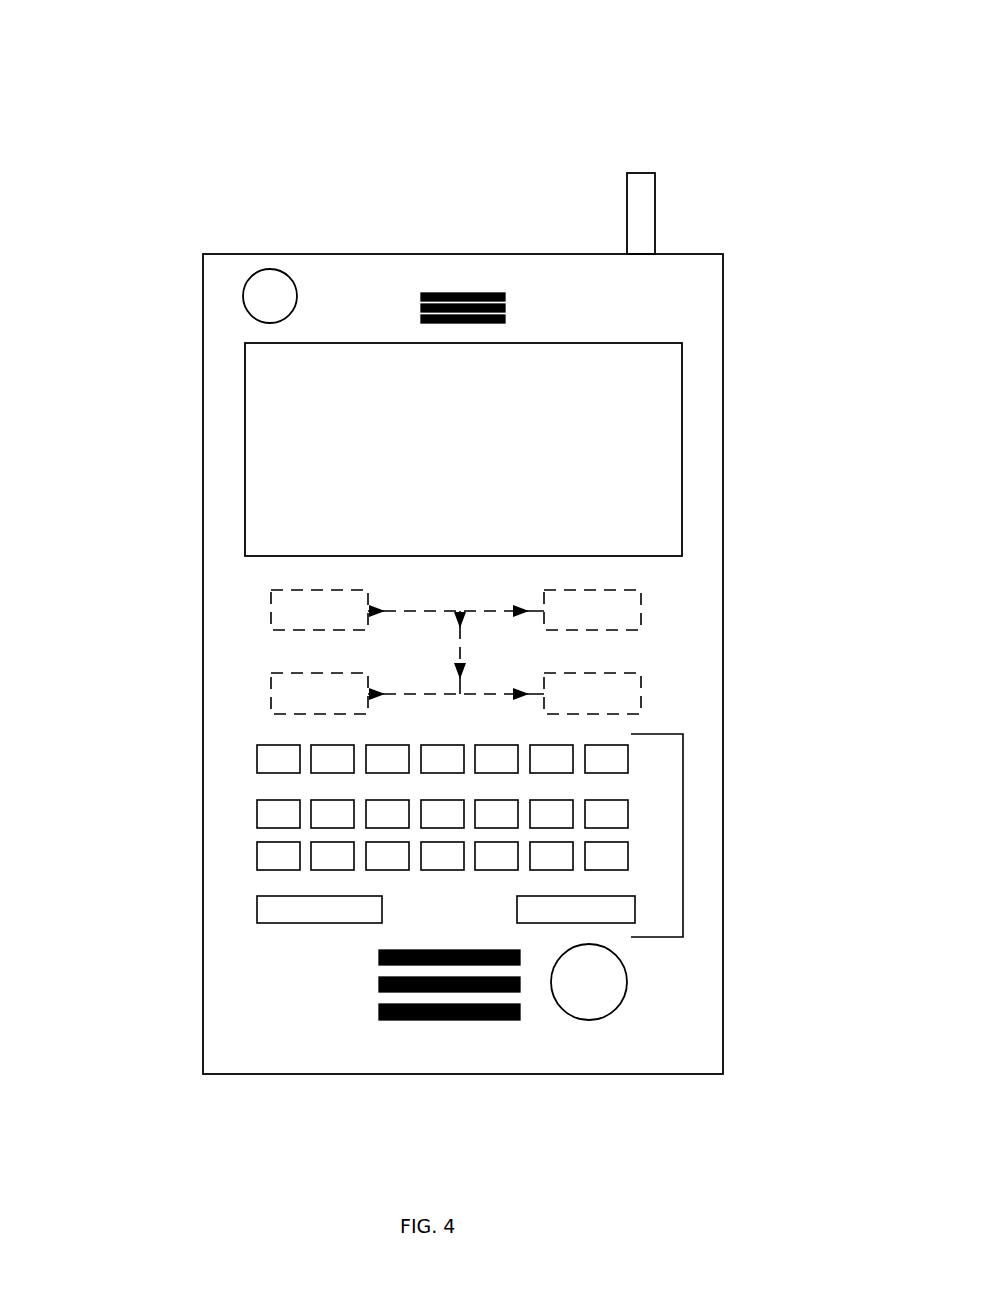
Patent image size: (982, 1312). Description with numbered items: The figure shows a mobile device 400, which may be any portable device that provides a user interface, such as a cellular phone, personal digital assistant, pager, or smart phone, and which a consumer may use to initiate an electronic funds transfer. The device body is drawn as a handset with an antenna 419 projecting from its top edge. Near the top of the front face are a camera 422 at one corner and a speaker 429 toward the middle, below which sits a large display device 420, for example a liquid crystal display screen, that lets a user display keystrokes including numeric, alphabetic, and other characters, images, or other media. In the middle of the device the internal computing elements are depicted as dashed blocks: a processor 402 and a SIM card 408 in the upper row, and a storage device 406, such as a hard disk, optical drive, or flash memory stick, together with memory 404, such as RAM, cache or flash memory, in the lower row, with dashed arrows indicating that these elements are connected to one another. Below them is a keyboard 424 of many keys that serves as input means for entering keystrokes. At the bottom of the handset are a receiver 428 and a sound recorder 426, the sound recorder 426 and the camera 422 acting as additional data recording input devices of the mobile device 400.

The mobile device 400 is at (531, 114).
The antenna 419 is at (645, 208).
The camera 422 is at (240, 290).
The speaker 429 is at (459, 293).
The display device 420 is at (659, 483).
The processor 402 is at (268, 607).
The SIM card 408 is at (644, 607).
The storage device 406 is at (268, 691).
The memory 404 is at (644, 691).
The keyboard 424 is at (685, 827).
The sound recorder 426 is at (594, 979).
The receiver 428 is at (448, 1022).